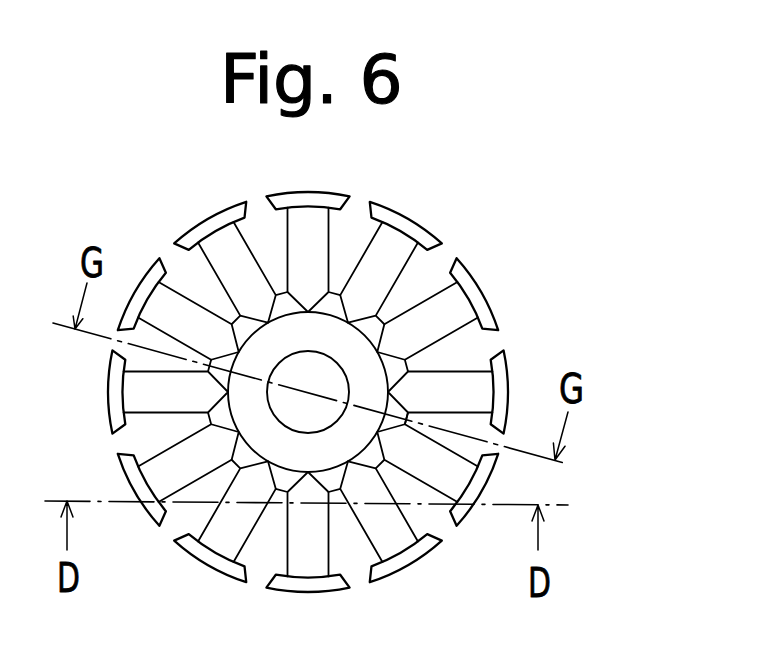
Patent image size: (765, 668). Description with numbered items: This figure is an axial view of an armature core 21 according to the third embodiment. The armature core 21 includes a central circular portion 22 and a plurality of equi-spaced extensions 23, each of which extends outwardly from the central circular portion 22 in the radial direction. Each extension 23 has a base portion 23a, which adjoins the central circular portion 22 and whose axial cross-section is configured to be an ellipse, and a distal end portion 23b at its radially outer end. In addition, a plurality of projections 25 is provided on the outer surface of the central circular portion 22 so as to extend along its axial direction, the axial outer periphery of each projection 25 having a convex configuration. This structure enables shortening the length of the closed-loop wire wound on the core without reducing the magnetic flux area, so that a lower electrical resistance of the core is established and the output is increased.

The armature core 21 is at (386, 353).
The central circular portion 22 is at (265, 348).
The extension 23 is at (510, 252).
The base portion 23a is at (387, 277).
The distal end portion 23b is at (413, 220).
The projection 25 is at (385, 415).